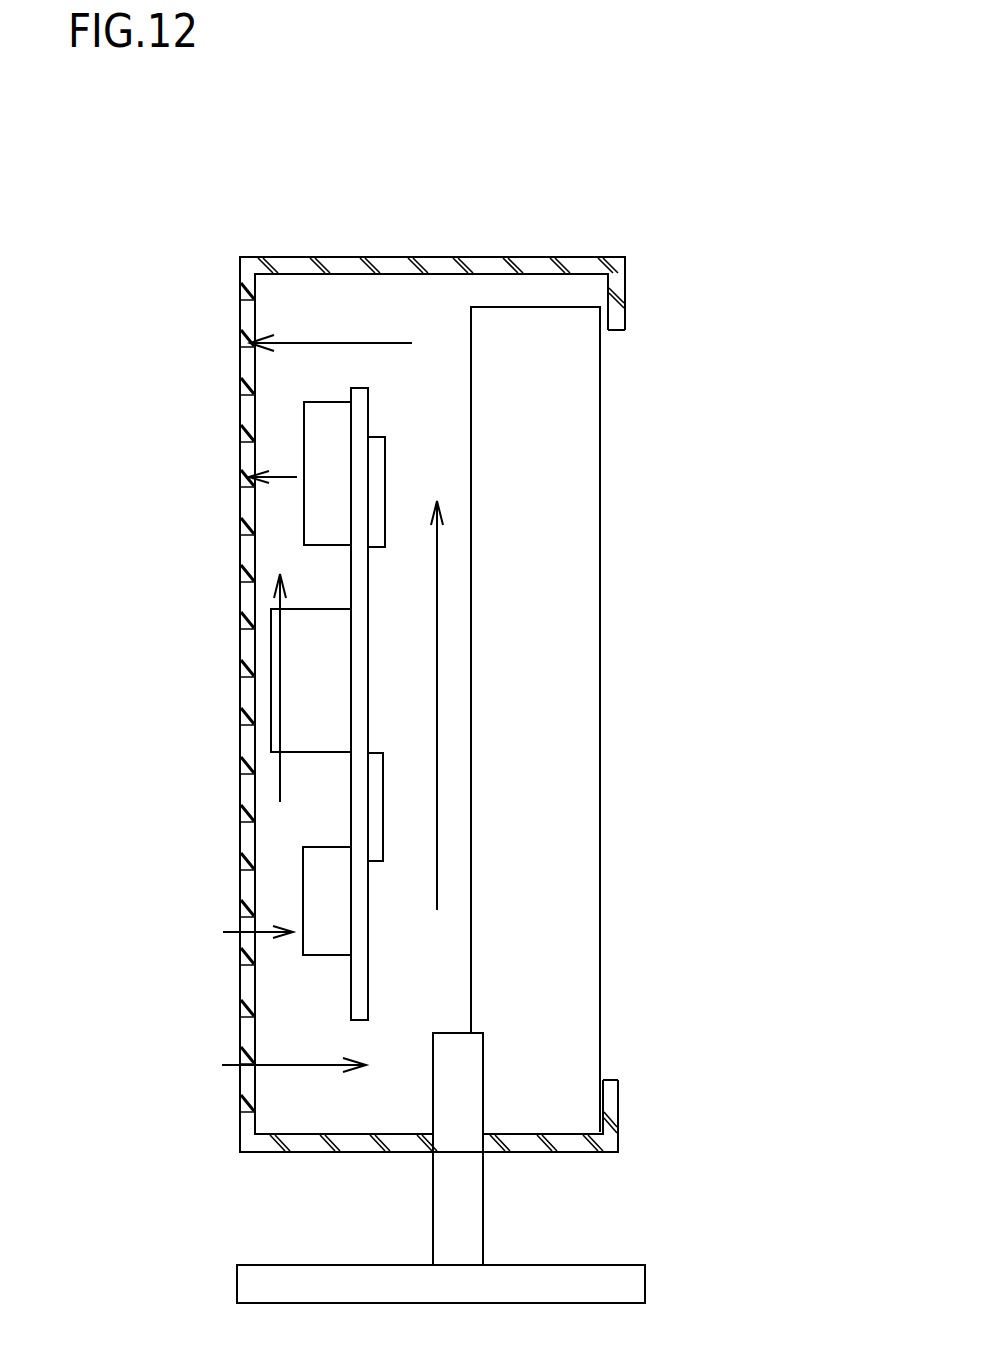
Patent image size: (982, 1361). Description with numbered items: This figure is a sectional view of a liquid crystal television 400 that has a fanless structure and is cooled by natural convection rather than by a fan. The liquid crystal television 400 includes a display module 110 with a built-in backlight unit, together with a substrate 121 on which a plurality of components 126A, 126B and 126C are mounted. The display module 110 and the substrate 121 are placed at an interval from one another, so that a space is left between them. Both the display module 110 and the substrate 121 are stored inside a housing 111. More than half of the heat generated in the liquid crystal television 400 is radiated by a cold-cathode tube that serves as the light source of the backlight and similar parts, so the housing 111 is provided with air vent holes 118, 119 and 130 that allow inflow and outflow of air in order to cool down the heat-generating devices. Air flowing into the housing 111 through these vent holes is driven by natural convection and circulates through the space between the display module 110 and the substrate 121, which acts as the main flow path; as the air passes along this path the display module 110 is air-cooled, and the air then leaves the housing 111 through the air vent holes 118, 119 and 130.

The liquid crystal television 400 is at (253, 186).
The housing 111 is at (542, 270).
The display module 110 is at (560, 632).
The substrate 121 is at (360, 978).
The component 126A is at (310, 681).
The component 126B is at (323, 438).
The component 126C is at (377, 473).
The air vent hole 130 is at (247, 505).
The air vent hole 119 is at (248, 370).
The air vent hole 118 is at (247, 1090).